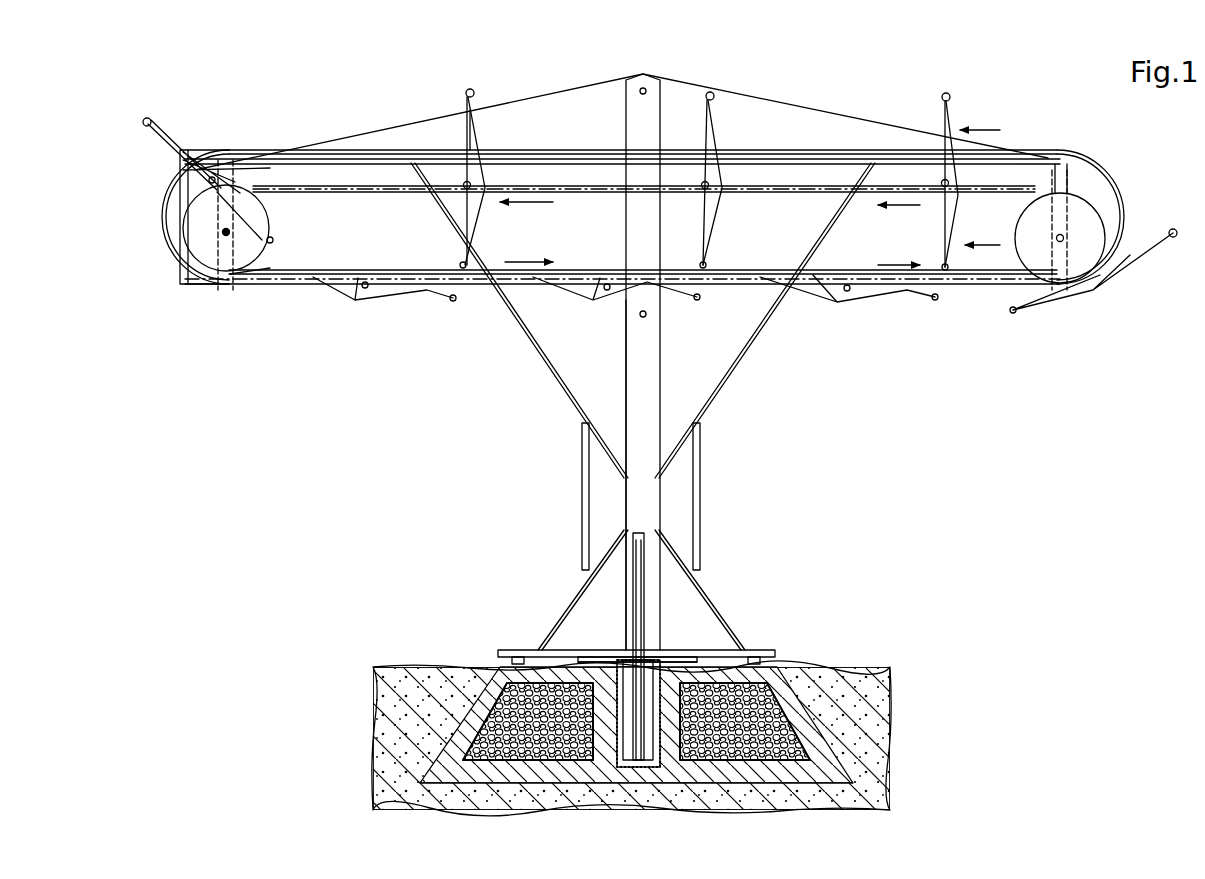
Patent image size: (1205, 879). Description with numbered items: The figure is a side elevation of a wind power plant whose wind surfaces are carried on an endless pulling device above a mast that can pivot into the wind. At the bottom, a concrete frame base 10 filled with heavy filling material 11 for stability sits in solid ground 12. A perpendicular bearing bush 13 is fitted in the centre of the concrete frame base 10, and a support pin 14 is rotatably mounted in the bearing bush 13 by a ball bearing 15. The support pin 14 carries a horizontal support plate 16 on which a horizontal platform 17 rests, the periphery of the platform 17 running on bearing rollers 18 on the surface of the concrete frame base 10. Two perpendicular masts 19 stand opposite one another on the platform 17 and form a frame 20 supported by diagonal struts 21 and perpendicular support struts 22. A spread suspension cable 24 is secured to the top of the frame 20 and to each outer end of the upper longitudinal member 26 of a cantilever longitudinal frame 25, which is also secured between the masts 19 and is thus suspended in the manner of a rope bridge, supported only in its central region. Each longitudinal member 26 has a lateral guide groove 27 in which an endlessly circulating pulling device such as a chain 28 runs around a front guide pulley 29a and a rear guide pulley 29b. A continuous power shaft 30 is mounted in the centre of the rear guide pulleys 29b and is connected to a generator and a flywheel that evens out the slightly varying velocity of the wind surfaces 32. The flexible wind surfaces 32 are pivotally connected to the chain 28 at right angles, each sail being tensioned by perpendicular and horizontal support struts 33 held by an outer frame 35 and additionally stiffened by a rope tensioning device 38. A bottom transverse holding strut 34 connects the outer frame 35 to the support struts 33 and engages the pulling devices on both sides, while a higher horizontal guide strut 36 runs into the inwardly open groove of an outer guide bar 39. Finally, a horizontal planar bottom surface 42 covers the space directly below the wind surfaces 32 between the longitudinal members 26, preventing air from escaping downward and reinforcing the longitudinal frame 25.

The concrete frame base 10 is at (412, 731).
The heavy filling material 11 is at (812, 700).
The solid ground 12 is at (840, 722).
The bearing bush 13 is at (550, 650).
The support pin 14 is at (662, 657).
The ball bearing 15 is at (607, 656).
The horizontal support plate 16 is at (718, 656).
The horizontal platform 17 is at (665, 650).
The bearing rollers 18 is at (512, 660).
The perpendicular masts 19 is at (645, 400).
The frame 20 is at (612, 388).
The diagonal struts 21 is at (542, 362).
The perpendicular support struts 22 is at (584, 478).
The suspension cable 24 is at (790, 106).
The longitudinal frame 25 is at (1048, 152).
The longitudinal member 26 is at (205, 150).
The lateral guide groove 27 is at (285, 186).
The chain 28 is at (740, 272).
The front guide pulley 29a is at (1085, 215).
The rear guide pulley 29b is at (193, 290).
The power shaft 30 is at (222, 234).
The wind surfaces 32 is at (183, 145).
The support struts 33 is at (455, 170).
The transverse holding strut 34 is at (445, 205).
The outer frame 35 is at (462, 92).
The guide strut 36 is at (452, 186).
The tensioning device 38 is at (962, 140).
The guide bar 39 is at (530, 160).
The bottom surface 42 is at (283, 252).